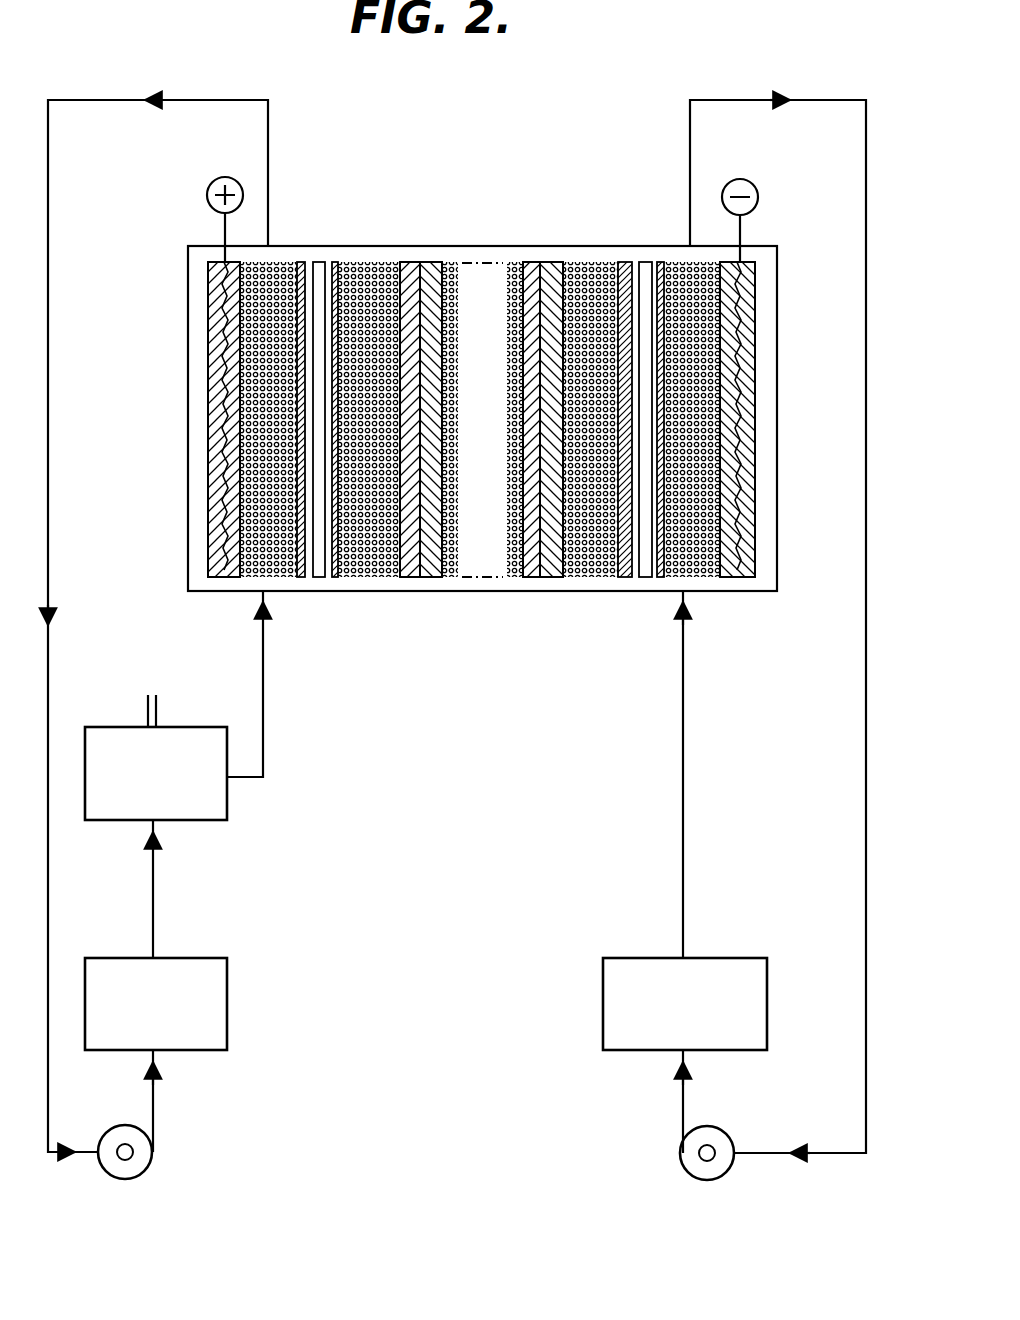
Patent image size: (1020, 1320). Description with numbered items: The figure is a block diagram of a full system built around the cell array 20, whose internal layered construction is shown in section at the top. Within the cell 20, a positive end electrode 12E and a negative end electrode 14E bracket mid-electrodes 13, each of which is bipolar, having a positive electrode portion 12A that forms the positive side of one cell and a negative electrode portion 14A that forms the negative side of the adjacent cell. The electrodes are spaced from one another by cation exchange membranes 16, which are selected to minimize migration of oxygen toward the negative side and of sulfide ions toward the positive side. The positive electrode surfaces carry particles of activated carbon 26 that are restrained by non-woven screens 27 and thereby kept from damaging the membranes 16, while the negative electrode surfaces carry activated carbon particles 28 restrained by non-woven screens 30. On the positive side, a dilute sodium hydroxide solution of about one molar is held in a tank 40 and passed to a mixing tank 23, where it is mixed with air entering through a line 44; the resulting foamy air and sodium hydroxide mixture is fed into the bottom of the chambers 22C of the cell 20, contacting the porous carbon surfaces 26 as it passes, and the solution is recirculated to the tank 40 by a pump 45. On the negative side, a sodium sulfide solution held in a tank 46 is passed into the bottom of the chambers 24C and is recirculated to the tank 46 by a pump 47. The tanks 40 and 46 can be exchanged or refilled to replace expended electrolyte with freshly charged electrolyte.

The cell array 20 is at (772, 500).
The end positive electrode 12E is at (208, 342).
The activated carbon particles 26 is at (240, 297).
The non-woven screens 27 is at (301, 262).
The cation exchange membranes 16 is at (319, 262).
The non-woven screens 30 is at (338, 262).
The activated carbon particles 28 is at (370, 262).
The positive electrode portion 12A is at (441, 262).
The negative electrode portion 14A is at (408, 262).
The mid-electrode 13 is at (424, 244).
The end negative electrode 14E is at (750, 423).
The chambers 22C is at (255, 580).
The chambers 24C is at (380, 580).
The mixing tank 23 is at (160, 789).
The line 44 is at (153, 683).
The tank 40 is at (160, 1019).
The pump 45 is at (130, 1170).
The tank 46 is at (690, 1019).
The pump 47 is at (707, 1175).